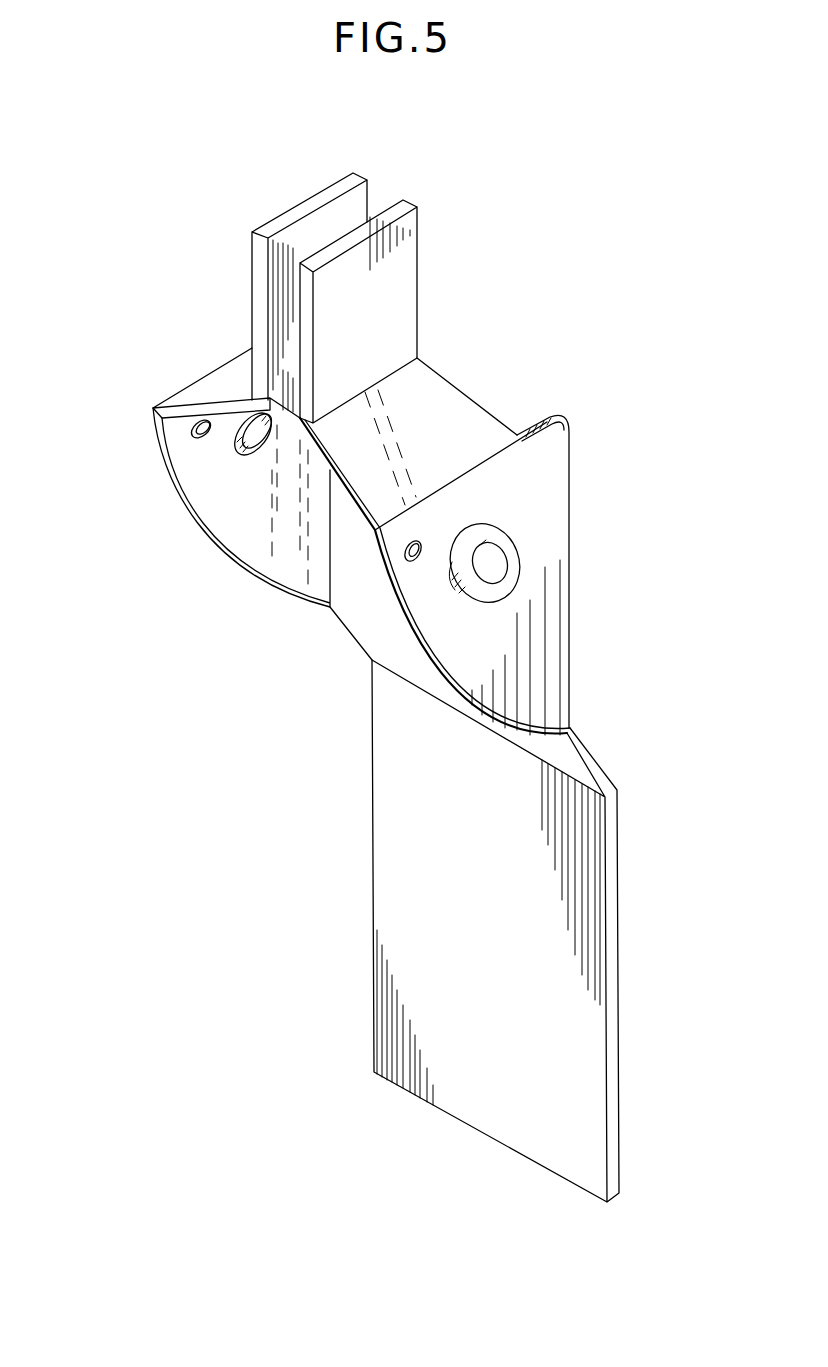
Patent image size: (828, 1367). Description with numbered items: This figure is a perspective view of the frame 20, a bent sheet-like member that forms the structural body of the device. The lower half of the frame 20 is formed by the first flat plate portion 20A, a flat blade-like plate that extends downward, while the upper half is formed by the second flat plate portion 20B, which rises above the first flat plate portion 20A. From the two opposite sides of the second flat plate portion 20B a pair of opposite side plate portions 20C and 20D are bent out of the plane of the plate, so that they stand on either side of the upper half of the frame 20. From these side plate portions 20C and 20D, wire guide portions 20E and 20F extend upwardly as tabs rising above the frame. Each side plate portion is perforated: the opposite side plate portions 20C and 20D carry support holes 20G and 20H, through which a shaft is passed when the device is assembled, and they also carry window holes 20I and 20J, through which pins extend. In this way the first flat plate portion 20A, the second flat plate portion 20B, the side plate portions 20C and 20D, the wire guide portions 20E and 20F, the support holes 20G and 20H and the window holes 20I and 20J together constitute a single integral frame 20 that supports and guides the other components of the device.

The frame 20 is at (616, 902).
The first flat plate portion 20A is at (412, 912).
The second flat plate portion 20B is at (372, 607).
The side plate portion 20C is at (521, 497).
The side plate portion 20D is at (225, 513).
The wire guide portion 20E is at (400, 290).
The wire guide portion 20F is at (252, 290).
The support hole 20G is at (403, 552).
The support hole 20H is at (187, 438).
The window hole 20I is at (510, 553).
The window hole 20J is at (243, 448).